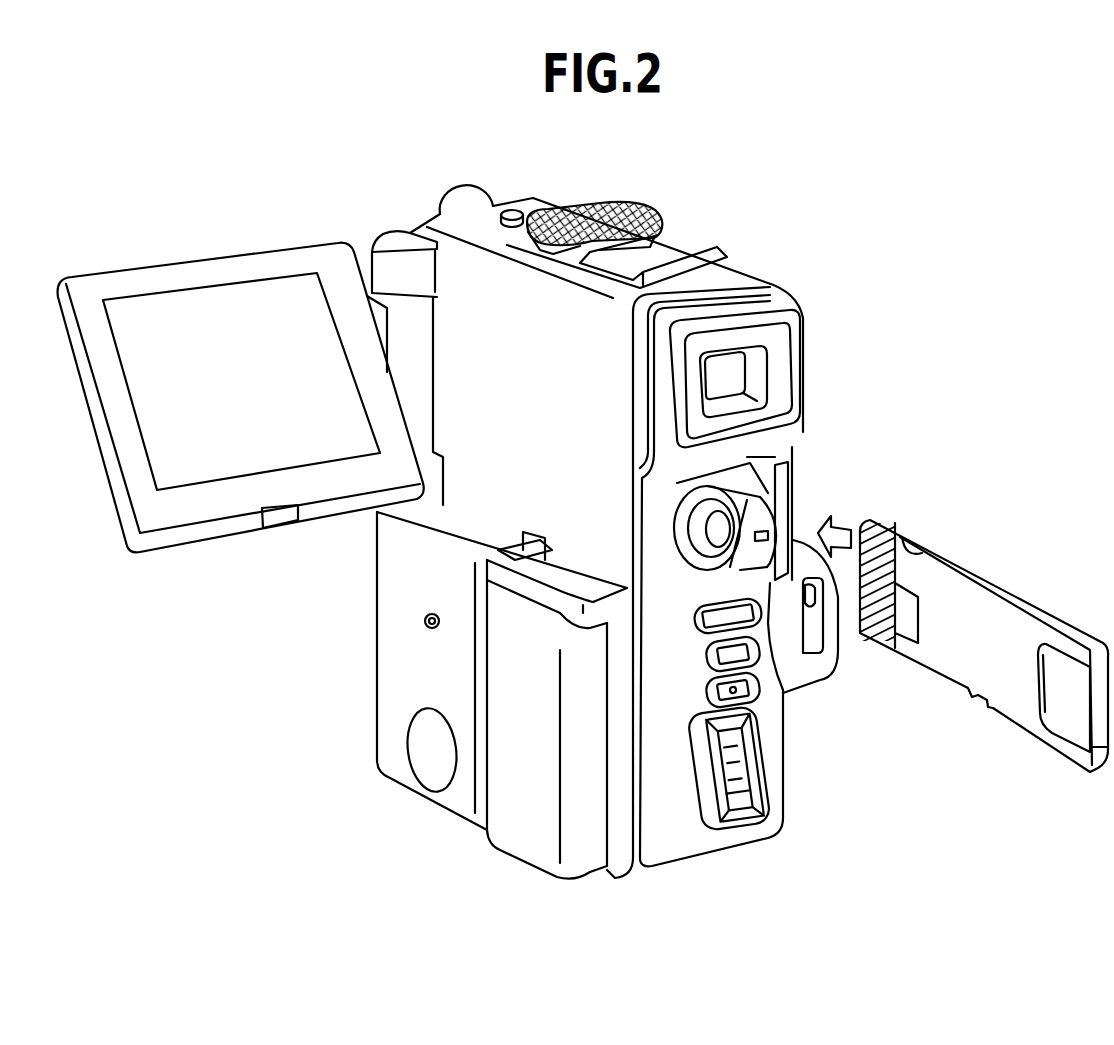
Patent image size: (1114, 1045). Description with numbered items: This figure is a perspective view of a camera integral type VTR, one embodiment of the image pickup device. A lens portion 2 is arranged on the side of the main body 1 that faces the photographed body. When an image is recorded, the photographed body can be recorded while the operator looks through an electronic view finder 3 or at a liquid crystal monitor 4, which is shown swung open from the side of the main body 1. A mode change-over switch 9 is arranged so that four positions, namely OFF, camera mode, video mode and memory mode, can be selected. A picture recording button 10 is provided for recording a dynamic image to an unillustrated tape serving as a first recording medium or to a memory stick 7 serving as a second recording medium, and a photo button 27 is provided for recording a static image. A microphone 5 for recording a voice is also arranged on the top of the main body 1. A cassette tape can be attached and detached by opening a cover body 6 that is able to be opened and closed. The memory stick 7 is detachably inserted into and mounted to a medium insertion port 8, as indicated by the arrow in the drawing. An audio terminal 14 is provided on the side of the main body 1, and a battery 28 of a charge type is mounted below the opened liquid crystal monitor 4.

The main body 1 is at (540, 200).
The lens portion 2 is at (458, 197).
The photo button 27 is at (513, 209).
The microphone 5 is at (614, 212).
The liquid crystal monitor 4 is at (244, 298).
The electronic view finder 3 is at (780, 332).
The medium insertion port 8 is at (787, 470).
The picture recording button 10 is at (720, 527).
The mode change-over switch 9 is at (773, 523).
The memory stick 7 is at (947, 682).
The audio terminal 14 is at (425, 621).
The battery 28 is at (503, 810).
The cover body 6 is at (670, 840).